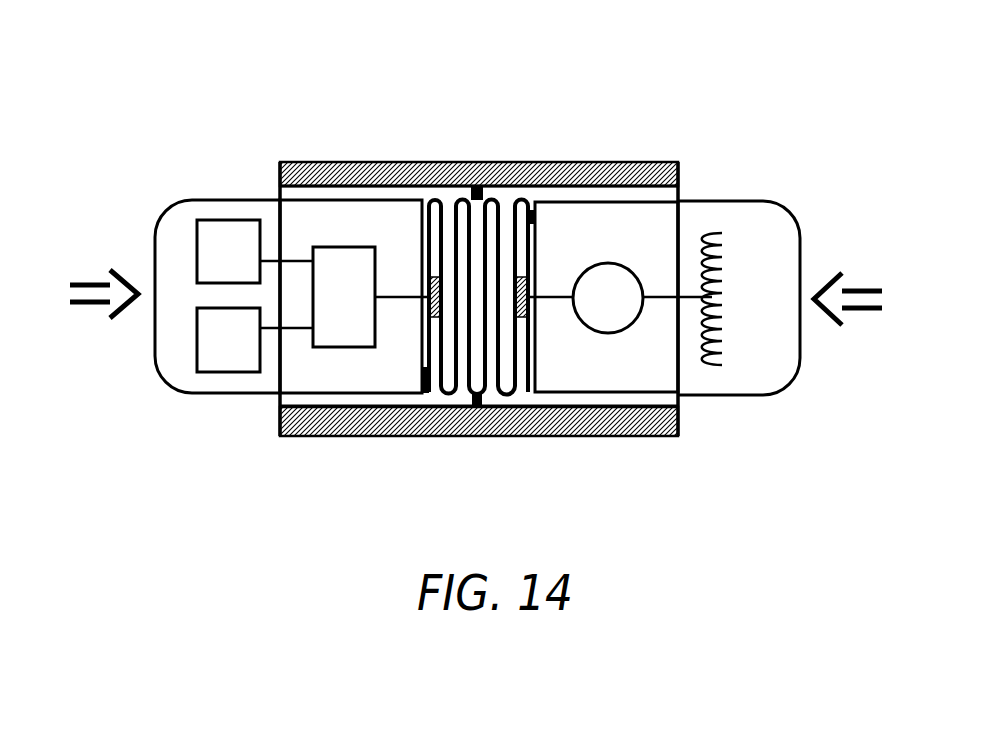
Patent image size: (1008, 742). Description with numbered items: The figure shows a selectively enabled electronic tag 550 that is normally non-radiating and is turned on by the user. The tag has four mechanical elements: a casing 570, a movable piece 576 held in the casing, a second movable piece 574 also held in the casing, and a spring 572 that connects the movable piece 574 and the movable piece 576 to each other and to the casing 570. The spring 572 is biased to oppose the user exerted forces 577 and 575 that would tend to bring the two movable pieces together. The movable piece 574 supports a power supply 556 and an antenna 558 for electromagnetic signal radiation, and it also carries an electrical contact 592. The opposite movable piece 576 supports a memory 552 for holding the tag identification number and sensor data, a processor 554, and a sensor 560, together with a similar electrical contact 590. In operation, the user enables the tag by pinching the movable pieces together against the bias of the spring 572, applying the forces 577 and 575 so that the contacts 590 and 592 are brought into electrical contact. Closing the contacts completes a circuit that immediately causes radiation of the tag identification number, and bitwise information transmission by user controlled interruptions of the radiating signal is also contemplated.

The selectively enabled electronic tag 550 is at (723, 108).
The memory 552 is at (250, 356).
The processor 554 is at (365, 308).
The power supply 556 is at (630, 310).
The antenna 558 is at (722, 270).
The sensor 560 is at (250, 267).
The casing 570 is at (562, 162).
The spring 572 is at (457, 188).
The movable piece 574 is at (780, 383).
The user exerted force 575 is at (860, 313).
The movable piece 576 is at (175, 202).
The user exerted force 577 is at (98, 282).
The electrical contact 590 is at (435, 400).
The electrical contact 592 is at (525, 400).